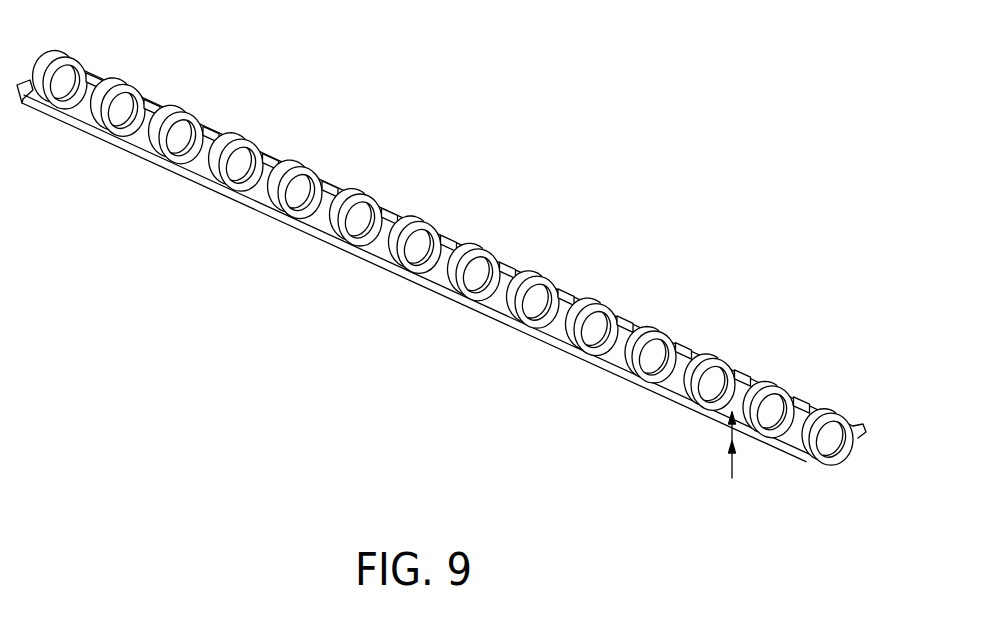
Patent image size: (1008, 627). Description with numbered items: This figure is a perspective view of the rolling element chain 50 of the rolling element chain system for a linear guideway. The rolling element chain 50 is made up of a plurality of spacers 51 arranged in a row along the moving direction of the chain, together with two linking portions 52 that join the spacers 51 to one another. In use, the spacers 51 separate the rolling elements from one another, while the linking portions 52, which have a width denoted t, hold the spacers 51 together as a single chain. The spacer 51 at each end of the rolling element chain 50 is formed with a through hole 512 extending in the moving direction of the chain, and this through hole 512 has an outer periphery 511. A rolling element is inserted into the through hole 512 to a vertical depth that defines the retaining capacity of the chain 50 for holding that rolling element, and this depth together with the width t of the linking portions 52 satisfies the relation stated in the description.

The rolling element chain 50 is at (455, 301).
The spacer 51 is at (350, 198).
The linking portion 52 is at (398, 213).
The outer periphery 511 is at (847, 446).
The through hole 512 is at (852, 483).